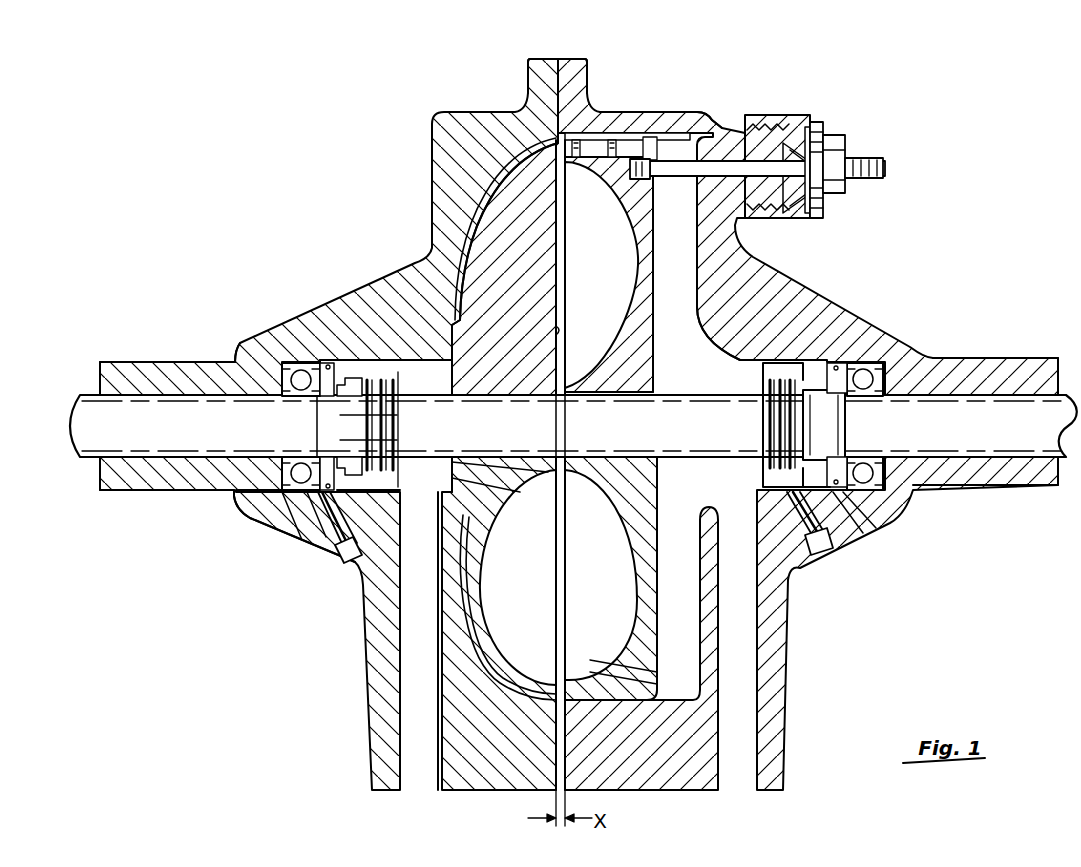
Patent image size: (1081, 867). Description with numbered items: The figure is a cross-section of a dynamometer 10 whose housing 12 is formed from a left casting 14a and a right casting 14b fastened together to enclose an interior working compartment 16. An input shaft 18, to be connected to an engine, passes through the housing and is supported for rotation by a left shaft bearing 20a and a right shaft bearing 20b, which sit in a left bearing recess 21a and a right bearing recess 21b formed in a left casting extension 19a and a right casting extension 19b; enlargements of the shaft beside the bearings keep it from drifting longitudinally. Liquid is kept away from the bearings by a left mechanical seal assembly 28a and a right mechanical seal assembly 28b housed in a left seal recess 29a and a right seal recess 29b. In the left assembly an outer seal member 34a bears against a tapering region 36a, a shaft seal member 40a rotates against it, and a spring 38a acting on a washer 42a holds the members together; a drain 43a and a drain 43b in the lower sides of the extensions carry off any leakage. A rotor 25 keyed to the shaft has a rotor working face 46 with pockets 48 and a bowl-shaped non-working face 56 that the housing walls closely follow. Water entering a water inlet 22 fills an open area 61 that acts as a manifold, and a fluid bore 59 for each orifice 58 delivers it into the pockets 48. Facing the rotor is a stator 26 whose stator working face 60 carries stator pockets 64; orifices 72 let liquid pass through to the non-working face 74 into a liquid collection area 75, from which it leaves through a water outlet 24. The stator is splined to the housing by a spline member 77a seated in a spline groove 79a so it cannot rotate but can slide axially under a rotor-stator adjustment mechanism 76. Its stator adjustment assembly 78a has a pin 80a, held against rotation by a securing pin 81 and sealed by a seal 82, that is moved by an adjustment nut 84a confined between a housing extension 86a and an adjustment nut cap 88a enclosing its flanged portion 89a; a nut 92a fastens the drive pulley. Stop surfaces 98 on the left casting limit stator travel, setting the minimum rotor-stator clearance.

The dynamometer 10 is at (705, 64).
The housing 12 is at (565, 50).
The left casting 14a is at (495, 118).
The right casting 14b is at (602, 110).
The interior working compartment 16 is at (692, 374).
The input shaft 18 is at (103, 429).
The left casting extension 19a is at (166, 357).
The right casting extension 19b is at (990, 355).
The left shaft bearing 20a is at (282, 368).
The right shaft bearing 20b is at (888, 358).
The left bearing recess 21a is at (278, 521).
The right bearing recess 21b is at (878, 358).
The water inlet 22 is at (417, 775).
The water outlet 24 is at (734, 775).
The rotor 25 is at (508, 305).
The stator 26 is at (645, 263).
The left mechanical seal assembly 28a is at (327, 545).
The right mechanical seal assembly 28b is at (838, 542).
The left seal recess 29a is at (362, 356).
The right seal recess 29b is at (792, 368).
The outer seal member 34a is at (256, 346).
The tapering region 36a is at (318, 358).
The spring 38a is at (385, 430).
The shaft seal member 40a is at (352, 376).
The washer 42a is at (397, 370).
The drain 43a is at (300, 530).
The drain 43b is at (842, 478).
The rotor working face 46 is at (556, 332).
The pockets 48 is at (516, 598).
The non-working face 56 is at (458, 592).
The orifices 58 is at (515, 492).
The fluid bore 59 is at (462, 472).
The stator working face 60 is at (566, 553).
The open area 61 is at (430, 368).
The stator pockets 64 is at (576, 599).
The orifices 72 is at (608, 662).
The non-working face 74 is at (654, 338).
The liquid collection area 75 is at (674, 533).
The rotor-stator adjustment mechanism 76 is at (878, 181).
The spline member 77a is at (596, 160).
The stator adjustment assembly 78a is at (822, 125).
The spline groove 79a is at (645, 134).
The pin 80a is at (886, 170).
The securing pin 81 is at (708, 114).
The seal 82 is at (696, 182).
The adjustment nut 84a is at (824, 203).
The housing extension 86a is at (735, 125).
The adjustment nut cap 88a is at (780, 118).
The flanged portion 89a is at (798, 216).
The nut 92a is at (843, 144).
The stop surfaces 98 is at (557, 147).